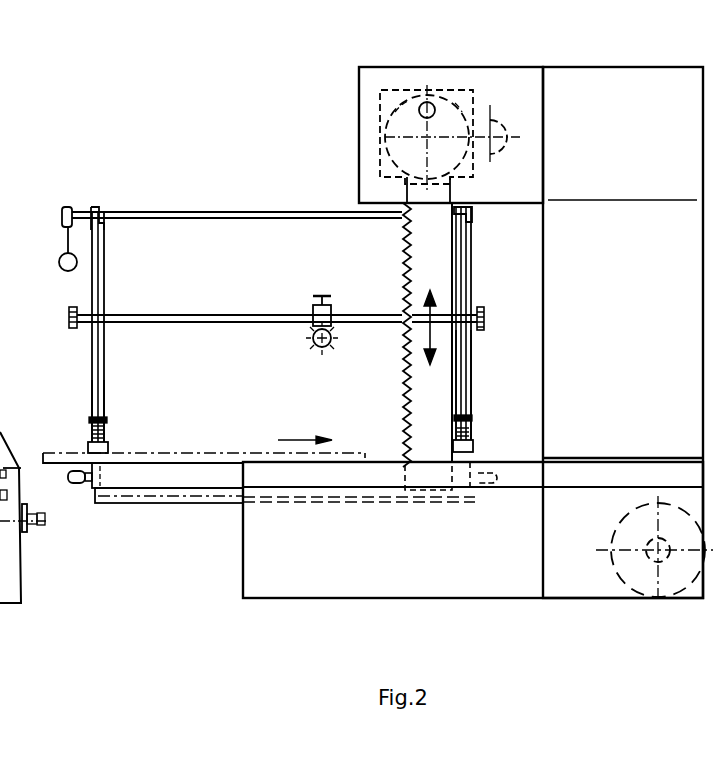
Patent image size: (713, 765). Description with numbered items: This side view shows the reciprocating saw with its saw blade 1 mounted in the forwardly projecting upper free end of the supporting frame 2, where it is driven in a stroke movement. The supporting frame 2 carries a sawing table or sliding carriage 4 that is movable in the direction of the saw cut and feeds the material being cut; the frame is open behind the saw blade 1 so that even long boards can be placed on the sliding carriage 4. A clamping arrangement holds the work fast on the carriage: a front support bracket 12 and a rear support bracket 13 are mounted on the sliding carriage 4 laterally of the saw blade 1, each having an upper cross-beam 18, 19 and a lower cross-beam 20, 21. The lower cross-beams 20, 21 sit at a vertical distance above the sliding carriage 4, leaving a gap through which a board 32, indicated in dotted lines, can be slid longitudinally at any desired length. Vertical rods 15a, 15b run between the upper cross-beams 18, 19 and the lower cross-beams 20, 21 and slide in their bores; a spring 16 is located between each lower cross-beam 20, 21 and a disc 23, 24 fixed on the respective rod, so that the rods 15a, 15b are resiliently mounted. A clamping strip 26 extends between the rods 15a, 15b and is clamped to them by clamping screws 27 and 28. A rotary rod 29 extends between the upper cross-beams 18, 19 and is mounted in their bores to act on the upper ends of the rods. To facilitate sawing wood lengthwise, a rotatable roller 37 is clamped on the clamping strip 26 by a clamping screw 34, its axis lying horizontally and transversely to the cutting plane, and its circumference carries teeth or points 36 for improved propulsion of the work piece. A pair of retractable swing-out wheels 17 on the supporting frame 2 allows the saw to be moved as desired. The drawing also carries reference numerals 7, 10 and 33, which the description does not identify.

The saw blade 1 is at (427, 400).
The supporting frame 2 is at (603, 92).
The sliding carriage 4 is at (68, 233).
The guide bar 7 is at (205, 496).
The clamping knob 10 is at (80, 483).
The support bracket 12 is at (92, 390).
The support bracket 13 is at (470, 335).
The vertical rod 15a is at (106, 279).
The vertical rod 15b is at (470, 271).
The spring 16 is at (106, 433).
The retractable swing-out wheels 17 is at (643, 571).
The upper cross-beam 18 is at (94, 208).
The upper cross-beam 19 is at (472, 218).
The lower cross-beam 20 is at (88, 447).
The lower cross-beam 21 is at (472, 445).
The disc 23 is at (106, 420).
The disc 24 is at (468, 418).
The clamping strip 26 is at (252, 316).
The clamping screw 27 is at (68, 318).
The clamping screw 28 is at (483, 311).
The rotary rod 29 is at (217, 174).
The board 32 is at (235, 453).
The slide block 33 is at (332, 306).
The clamping screw 34 is at (332, 296).
The points 36 is at (320, 350).
The rotatable roller 37 is at (312, 341).